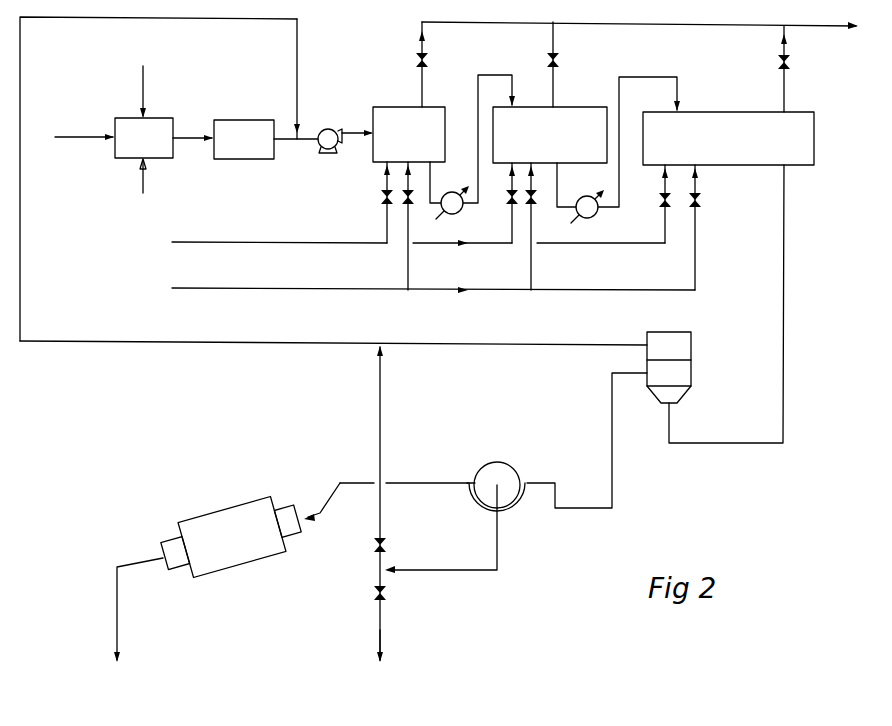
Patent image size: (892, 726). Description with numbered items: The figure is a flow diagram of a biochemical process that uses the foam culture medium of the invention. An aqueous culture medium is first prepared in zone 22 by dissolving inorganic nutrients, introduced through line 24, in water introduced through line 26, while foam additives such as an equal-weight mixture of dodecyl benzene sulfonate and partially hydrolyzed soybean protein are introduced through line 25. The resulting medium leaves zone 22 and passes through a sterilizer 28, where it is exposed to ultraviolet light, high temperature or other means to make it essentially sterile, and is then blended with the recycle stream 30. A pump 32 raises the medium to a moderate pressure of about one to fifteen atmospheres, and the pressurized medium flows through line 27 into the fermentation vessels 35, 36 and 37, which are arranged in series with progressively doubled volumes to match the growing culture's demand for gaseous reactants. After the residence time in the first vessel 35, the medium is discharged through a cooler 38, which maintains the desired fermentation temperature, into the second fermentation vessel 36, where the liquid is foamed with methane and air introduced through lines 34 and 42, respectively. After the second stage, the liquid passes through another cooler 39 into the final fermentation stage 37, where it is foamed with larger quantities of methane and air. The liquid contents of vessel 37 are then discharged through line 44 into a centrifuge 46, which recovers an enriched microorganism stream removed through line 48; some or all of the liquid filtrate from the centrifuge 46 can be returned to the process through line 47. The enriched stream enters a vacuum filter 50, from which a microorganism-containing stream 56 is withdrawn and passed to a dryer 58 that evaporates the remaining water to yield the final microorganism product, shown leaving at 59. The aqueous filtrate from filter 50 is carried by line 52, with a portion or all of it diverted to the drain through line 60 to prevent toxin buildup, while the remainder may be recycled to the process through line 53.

The zone 22 is at (144, 138).
The line 24 is at (145, 81).
The line 25 is at (142, 187).
The line 26 is at (70, 138).
The line 27 is at (355, 134).
The sterilizer 28 is at (235, 139).
The recycle stream 30 is at (298, 59).
The pump 32 is at (329, 153).
The line 34 is at (402, 240).
The fermentation vessel 35 is at (409, 134).
The fermentation vessel 36 is at (550, 135).
The fermentation vessel 37 is at (728, 138).
The cooler 38 is at (444, 208).
The cooler 39 is at (589, 210).
The line 42 is at (417, 286).
The line 44 is at (782, 317).
The centrifuge 46 is at (685, 352).
The line 47 is at (495, 344).
The line 48 is at (612, 462).
The vacuum filter 50 is at (515, 476).
The line 52 is at (446, 572).
The line 53 is at (380, 412).
The microorganism-containing stream 56 is at (355, 483).
The dryer 58 is at (240, 556).
The product outlet 59 is at (132, 626).
The line 60 is at (375, 662).